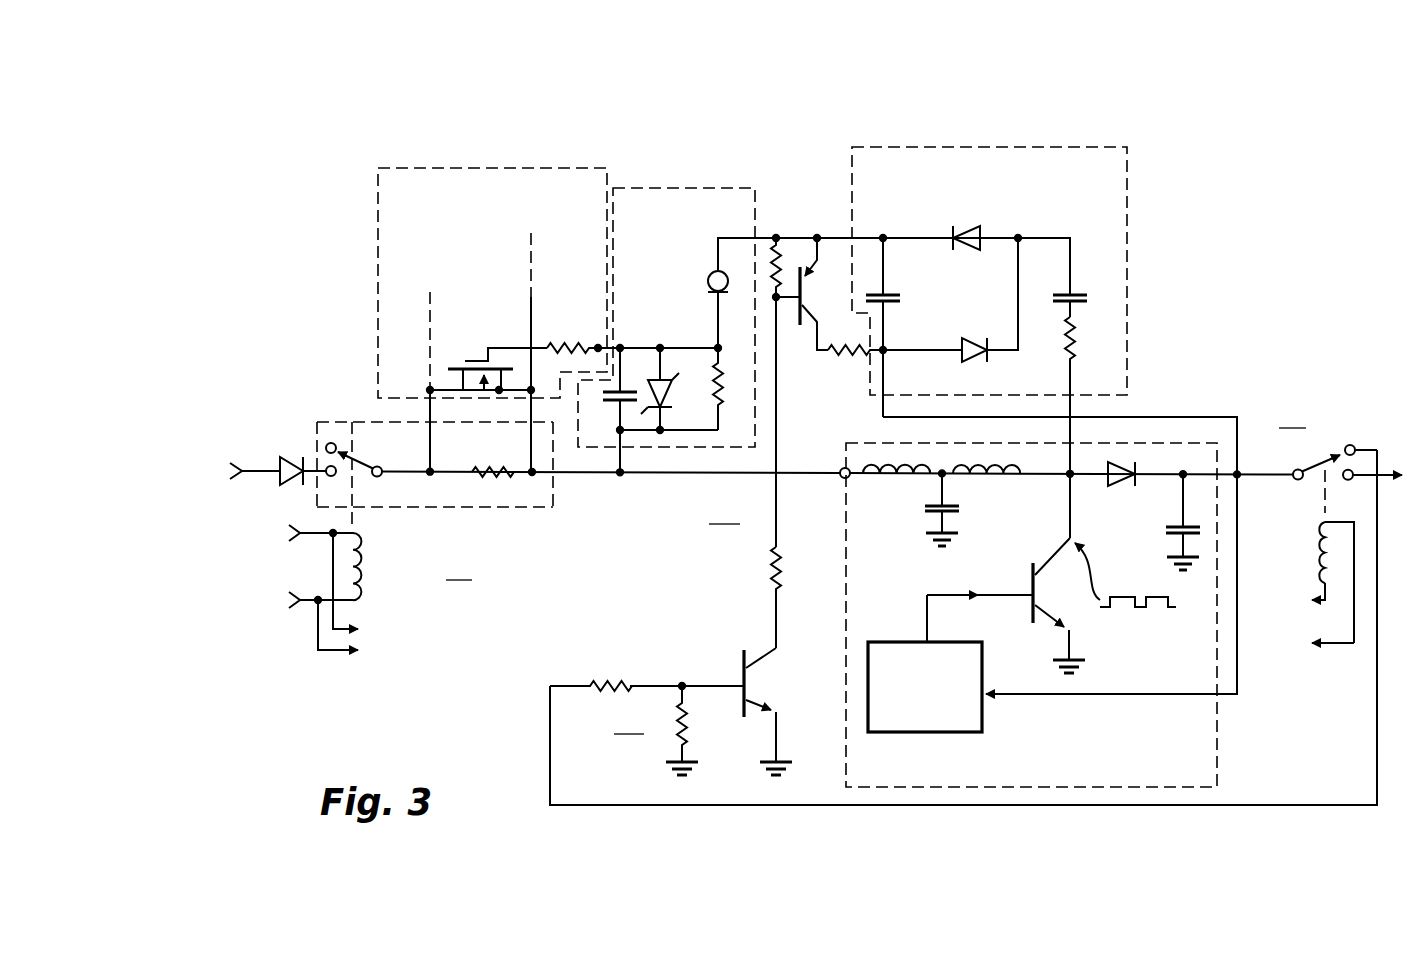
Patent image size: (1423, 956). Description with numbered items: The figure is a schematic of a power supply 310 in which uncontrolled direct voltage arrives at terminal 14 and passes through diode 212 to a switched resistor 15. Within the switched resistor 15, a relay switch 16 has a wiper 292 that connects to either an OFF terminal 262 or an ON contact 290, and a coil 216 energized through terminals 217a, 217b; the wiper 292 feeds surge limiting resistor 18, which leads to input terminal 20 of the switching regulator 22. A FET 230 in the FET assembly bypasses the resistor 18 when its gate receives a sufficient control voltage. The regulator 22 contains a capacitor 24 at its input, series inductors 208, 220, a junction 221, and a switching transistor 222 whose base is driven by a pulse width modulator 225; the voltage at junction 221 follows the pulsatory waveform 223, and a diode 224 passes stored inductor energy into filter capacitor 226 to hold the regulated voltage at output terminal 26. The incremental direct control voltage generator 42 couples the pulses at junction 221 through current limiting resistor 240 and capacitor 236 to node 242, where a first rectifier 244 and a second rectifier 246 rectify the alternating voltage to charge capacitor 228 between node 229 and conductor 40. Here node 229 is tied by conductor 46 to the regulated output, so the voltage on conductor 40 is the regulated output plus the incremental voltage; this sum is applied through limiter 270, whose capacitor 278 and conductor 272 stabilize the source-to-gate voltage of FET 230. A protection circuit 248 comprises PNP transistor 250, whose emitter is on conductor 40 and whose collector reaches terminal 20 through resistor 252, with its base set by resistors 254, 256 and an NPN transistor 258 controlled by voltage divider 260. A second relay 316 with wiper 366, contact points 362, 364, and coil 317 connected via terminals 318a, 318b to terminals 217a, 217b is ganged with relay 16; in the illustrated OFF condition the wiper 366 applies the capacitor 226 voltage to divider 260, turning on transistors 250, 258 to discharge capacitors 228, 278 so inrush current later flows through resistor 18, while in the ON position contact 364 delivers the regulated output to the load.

The terminal 14 is at (246, 458).
The diode 212 is at (286, 458).
The terminal 262 is at (317, 442).
The switch contact 290 is at (321, 479).
The wiper 292 is at (384, 452).
The switch 16 is at (374, 446).
The switched resistor 15 is at (480, 507).
The surge limiting resistor 18 is at (505, 467).
The power supply 310 is at (459, 568).
The coil 216 is at (363, 567).
The terminal 217a is at (302, 576).
The terminal 217b is at (332, 622).
The FET 230 is at (378, 218).
The limiter 270 is at (660, 188).
The capacitor 278 is at (618, 412).
The conductor 272 is at (620, 458).
The resistor 254 is at (782, 262).
The conductor 40 is at (838, 238).
The PNP switch transistor 250 is at (805, 311).
The current limiting resistor 252 is at (846, 355).
The capacitor 228 is at (885, 305).
The node 229 is at (885, 353).
The second rectifier 246 is at (976, 251).
The node 242 is at (1020, 240).
The first rectifier 244 is at (965, 339).
The capacitor 236 is at (1073, 292).
The current limiting resistor 240 is at (1075, 337).
The incremental direct control voltage generator 42 is at (1127, 208).
The conductor 46 is at (1218, 415).
The switching regulator 22 is at (1217, 728).
The input terminal 20 is at (840, 478).
The inductor 208 is at (899, 482).
The inductor 220 is at (986, 478).
The capacitor 24 is at (955, 508).
The junction 221 is at (1062, 483).
The diode 224 is at (1128, 484).
The filter capacitor 226 is at (1167, 533).
The output terminal 26 is at (1238, 478).
The switching transistor 222 is at (1031, 606).
The pulsatory waveform 223 is at (1154, 608).
The pulse width modulator 225 is at (982, 712).
The protection circuit 248 is at (724, 511).
The resistor 256 is at (771, 560).
The NPN transistor 258 is at (740, 659).
The voltage divider 260 is at (624, 728).
The relay 316 is at (1302, 458).
The wiper 366 is at (1313, 460).
The contact point 362 is at (1345, 445).
The contact point 364 is at (1369, 480).
The coil 317 is at (1318, 549).
The terminal 318a is at (1294, 593).
The terminal 318b is at (1309, 643).